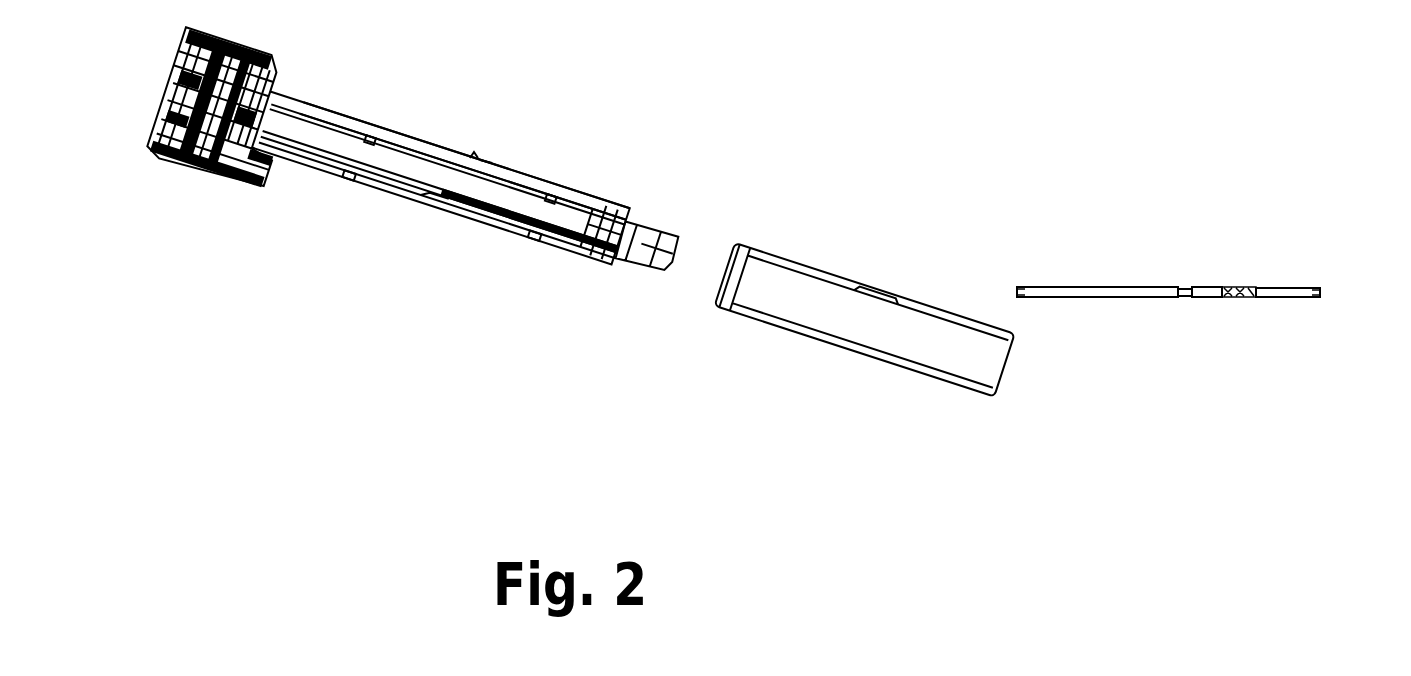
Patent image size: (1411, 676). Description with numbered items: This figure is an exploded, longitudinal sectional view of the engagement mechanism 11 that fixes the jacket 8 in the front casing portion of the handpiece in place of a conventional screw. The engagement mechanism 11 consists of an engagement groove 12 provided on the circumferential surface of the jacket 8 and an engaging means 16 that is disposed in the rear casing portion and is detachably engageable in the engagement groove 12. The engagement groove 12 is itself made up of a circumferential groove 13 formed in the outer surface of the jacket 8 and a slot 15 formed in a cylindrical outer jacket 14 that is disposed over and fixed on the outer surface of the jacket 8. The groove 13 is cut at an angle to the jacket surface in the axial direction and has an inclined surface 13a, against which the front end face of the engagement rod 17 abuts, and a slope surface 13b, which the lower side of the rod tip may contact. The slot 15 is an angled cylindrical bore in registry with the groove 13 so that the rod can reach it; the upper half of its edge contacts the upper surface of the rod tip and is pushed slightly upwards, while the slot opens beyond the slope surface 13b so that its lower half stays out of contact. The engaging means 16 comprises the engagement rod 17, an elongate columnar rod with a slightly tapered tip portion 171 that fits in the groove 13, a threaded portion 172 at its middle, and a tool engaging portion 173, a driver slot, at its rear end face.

The jacket 8 is at (405, 137).
The engagement mechanism 11 is at (1187, 166).
The engagement groove 12 is at (465, 152).
The circumferential groove 13 is at (480, 156).
The inclined surface 13a is at (476, 158).
The slope surface 13b is at (485, 160).
The outer jacket 14 is at (865, 287).
The slot 15 is at (880, 290).
The engaging means 16 is at (1197, 250).
The engagement rod 17 is at (1197, 250).
The tapered tip portion 171 is at (1022, 287).
The threaded portion 172 is at (1210, 287).
The tool engaging portion 173 is at (1313, 290).